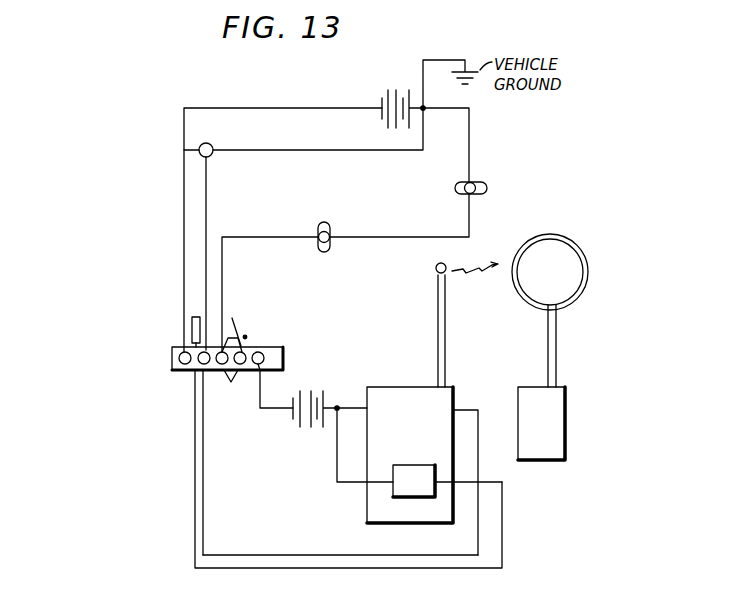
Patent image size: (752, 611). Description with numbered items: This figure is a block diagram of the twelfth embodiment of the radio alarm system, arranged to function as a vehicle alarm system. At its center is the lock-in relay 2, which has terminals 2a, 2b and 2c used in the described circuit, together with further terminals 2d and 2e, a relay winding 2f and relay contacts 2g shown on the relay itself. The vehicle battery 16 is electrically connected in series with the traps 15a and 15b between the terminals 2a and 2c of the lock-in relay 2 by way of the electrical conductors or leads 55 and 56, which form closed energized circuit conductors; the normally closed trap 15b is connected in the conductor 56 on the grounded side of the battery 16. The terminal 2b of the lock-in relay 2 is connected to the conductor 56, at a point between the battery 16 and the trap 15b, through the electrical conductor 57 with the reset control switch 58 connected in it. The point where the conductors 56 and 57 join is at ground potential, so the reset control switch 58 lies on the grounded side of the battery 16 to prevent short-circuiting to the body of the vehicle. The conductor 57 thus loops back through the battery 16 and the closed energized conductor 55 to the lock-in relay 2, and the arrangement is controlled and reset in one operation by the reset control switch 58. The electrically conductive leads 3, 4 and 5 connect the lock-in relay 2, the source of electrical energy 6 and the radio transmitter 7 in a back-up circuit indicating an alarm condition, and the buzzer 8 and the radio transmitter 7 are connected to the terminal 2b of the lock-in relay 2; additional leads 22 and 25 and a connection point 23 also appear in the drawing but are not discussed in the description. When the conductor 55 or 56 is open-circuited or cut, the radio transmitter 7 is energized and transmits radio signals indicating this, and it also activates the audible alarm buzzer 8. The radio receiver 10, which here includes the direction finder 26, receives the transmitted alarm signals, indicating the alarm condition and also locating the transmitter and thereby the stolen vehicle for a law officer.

The lock-in relay 2 is at (193, 350).
The terminal of the lock-in relay 2a is at (172, 357).
The terminal of the lock-in relay 2b is at (202, 370).
The terminal of the lock-in relay 2c is at (220, 370).
The relay terminal 2d is at (240, 370).
The relay terminal 2e is at (260, 368).
The relay winding 2f is at (192, 322).
The relay contacts 2g is at (281, 317).
The electrically conductive lead 3 is at (270, 410).
The electrically conductive lead 4 is at (356, 411).
The electrically conductive lead 5 is at (254, 555).
The source of electrical energy 6 is at (309, 430).
The radio transmitter 7 is at (370, 510).
The buzzer 8 is at (426, 487).
The radio receiver 10 is at (550, 461).
The trap 15a is at (370, 203).
The trap 15b is at (455, 188).
The battery 16 is at (392, 86).
The wire 22 is at (204, 385).
The junction 23 is at (340, 400).
The wire 25 is at (502, 526).
The direction finder 26 is at (586, 258).
The electrical conductor 55 is at (183, 211).
The electrical conductor 56 is at (470, 152).
The electrical conductor 57 is at (207, 210).
The reset control switch 58 is at (199, 151).